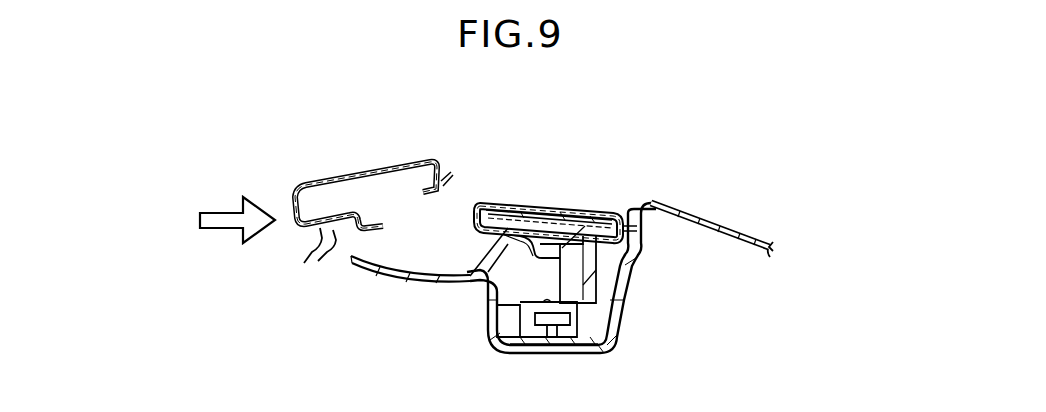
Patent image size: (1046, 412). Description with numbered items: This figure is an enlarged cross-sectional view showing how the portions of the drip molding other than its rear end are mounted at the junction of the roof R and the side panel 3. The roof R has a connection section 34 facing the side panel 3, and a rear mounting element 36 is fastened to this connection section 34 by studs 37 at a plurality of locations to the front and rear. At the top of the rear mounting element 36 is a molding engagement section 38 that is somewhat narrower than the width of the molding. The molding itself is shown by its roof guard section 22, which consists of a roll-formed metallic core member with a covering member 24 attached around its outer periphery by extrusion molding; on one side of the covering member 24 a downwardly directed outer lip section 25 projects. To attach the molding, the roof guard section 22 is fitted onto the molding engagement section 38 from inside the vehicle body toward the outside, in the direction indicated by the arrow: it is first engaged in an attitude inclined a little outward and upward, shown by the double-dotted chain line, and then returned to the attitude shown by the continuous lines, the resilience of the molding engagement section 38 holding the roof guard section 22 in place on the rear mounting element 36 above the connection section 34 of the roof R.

The roof guard section 22 is at (352, 175).
The outer lip section 25 is at (491, 201).
The molding engagement section 38 is at (533, 205).
The covering member 24 is at (600, 208).
The stud 37 is at (540, 300).
The connection section 34 is at (556, 348).
The rear mounting element 36 is at (620, 290).
The side panel 3 is at (711, 222).
The roof R is at (411, 277).